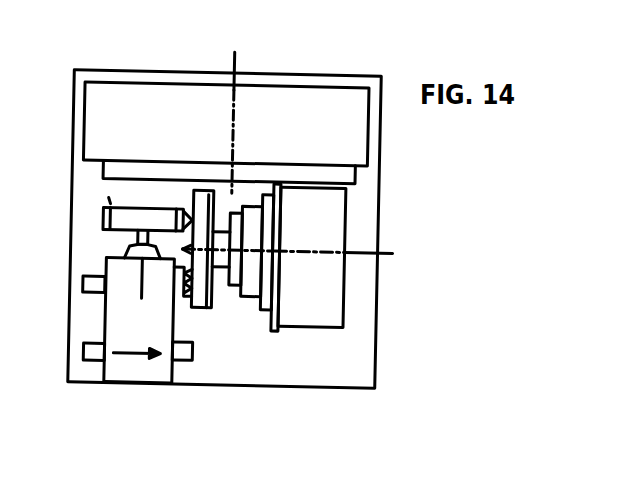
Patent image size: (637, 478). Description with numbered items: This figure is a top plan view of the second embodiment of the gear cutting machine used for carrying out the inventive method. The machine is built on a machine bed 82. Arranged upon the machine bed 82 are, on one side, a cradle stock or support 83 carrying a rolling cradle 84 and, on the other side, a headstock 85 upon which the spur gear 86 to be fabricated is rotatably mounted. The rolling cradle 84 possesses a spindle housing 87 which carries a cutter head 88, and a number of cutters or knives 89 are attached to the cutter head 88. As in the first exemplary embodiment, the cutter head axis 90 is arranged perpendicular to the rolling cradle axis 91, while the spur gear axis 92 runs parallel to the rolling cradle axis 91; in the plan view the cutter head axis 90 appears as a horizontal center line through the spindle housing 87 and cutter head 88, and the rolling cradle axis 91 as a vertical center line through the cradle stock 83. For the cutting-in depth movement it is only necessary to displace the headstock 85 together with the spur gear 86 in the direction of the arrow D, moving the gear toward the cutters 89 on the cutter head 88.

The machine bed 82 is at (363, 358).
The cradle stock 83 is at (328, 95).
The rolling cradle 84 is at (352, 176).
The headstock 85 is at (132, 385).
The spur gear 86 is at (103, 219).
The spindle housing 87 is at (330, 292).
The cutter head 88 is at (206, 188).
The cutters 89 is at (192, 198).
The cutter head axis 90 is at (386, 253).
The rolling cradle axis 91 is at (236, 60).
The spur gear axis 92 is at (142, 207).